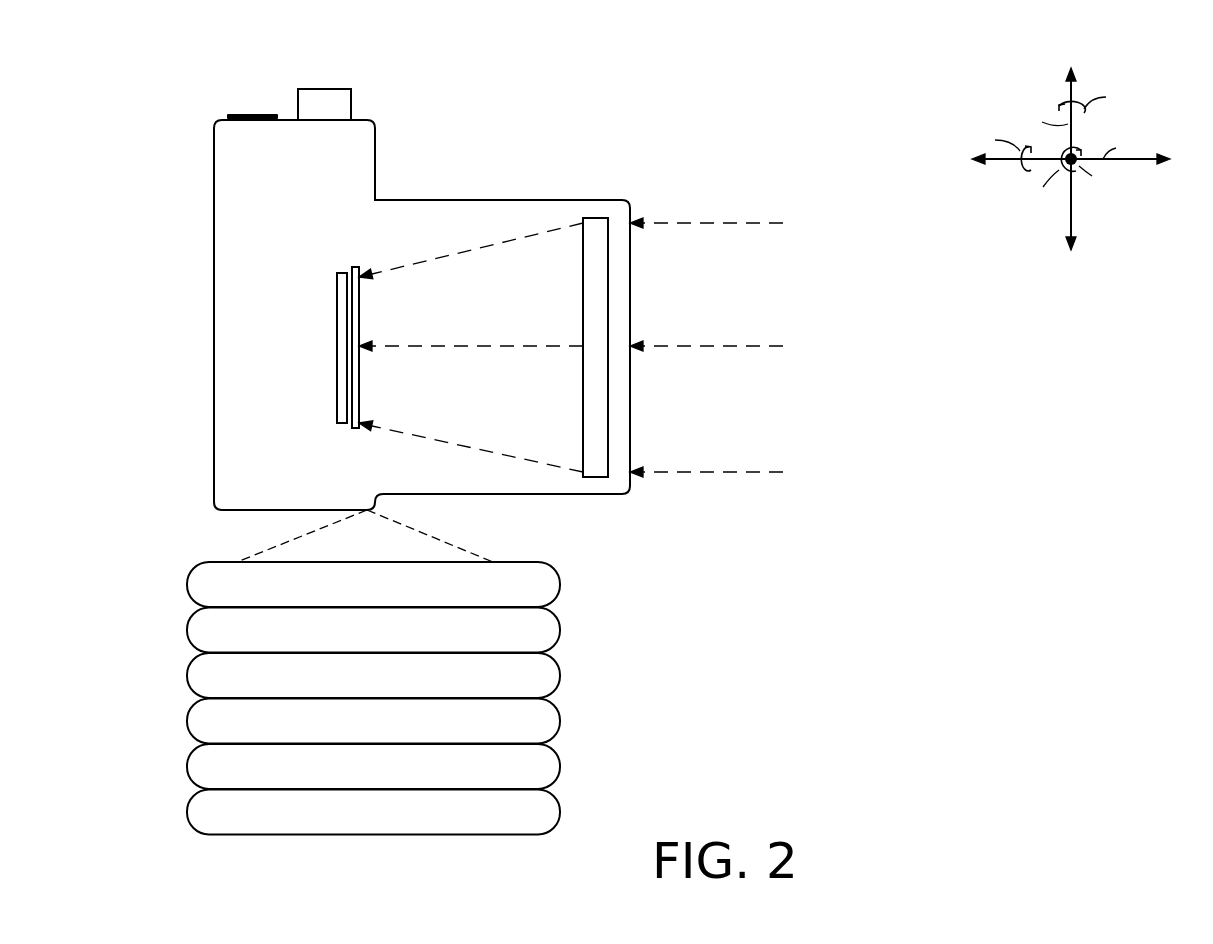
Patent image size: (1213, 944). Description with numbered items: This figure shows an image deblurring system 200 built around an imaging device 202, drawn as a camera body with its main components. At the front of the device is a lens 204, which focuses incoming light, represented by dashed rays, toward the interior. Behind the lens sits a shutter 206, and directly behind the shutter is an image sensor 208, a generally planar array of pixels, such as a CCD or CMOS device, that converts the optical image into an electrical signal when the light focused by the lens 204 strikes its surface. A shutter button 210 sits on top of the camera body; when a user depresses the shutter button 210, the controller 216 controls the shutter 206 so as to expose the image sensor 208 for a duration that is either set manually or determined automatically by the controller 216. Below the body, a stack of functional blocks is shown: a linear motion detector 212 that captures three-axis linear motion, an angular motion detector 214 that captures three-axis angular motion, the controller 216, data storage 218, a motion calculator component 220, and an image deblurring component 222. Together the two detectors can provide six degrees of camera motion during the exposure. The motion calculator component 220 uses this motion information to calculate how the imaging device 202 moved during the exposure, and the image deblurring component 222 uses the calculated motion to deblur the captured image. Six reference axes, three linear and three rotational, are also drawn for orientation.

The system 200 is at (667, 429).
The imaging device 202 is at (650, 175).
The lens 204 is at (583, 289).
The shutter 206 is at (359, 319).
The image sensor 208 is at (342, 423).
The shutter button 210 is at (258, 113).
The linear motion detector 212 is at (373, 584).
The angular motion detector 214 is at (373, 630).
The controller 216 is at (373, 675).
The data storage 218 is at (373, 721).
The motion calculator component 220 is at (373, 766).
The image deblurring component 222 is at (373, 812).